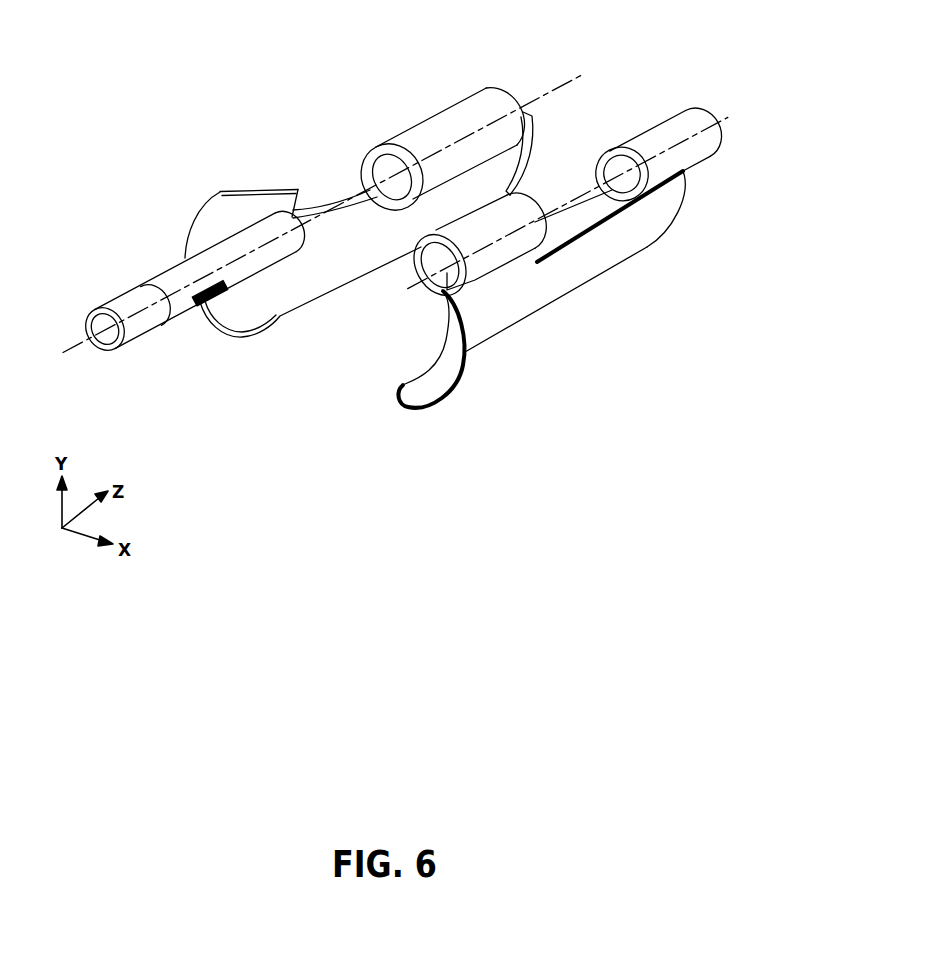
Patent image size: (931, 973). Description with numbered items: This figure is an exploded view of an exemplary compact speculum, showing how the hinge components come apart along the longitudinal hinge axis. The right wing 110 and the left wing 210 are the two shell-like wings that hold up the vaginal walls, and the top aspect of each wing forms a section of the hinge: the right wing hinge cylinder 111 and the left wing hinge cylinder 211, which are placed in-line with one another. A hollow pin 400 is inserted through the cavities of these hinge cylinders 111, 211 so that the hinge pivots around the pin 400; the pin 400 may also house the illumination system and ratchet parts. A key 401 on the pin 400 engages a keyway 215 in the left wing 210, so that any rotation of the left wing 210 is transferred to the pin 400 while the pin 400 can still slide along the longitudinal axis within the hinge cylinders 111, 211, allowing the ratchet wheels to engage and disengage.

The right wing 110 is at (567, 268).
The right wing hinge cylinder 111 is at (662, 167).
The left wing 210 is at (240, 210).
The left wing hinge cylinder 211 is at (433, 140).
The keyway 215 is at (415, 186).
The pin 400 is at (130, 308).
The key 401 is at (221, 294).